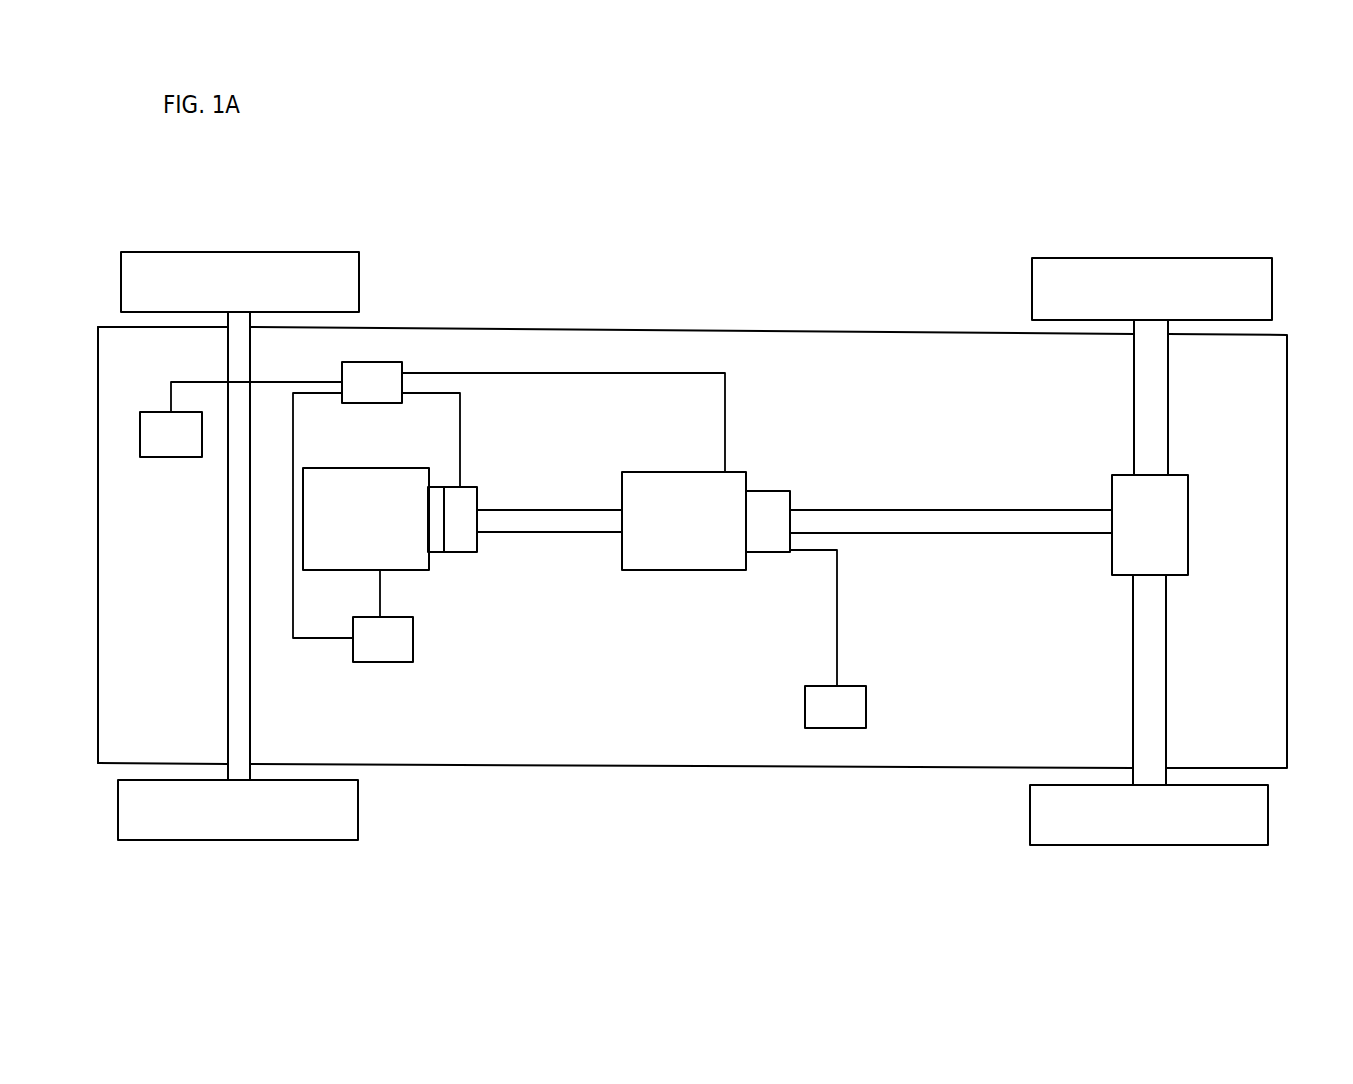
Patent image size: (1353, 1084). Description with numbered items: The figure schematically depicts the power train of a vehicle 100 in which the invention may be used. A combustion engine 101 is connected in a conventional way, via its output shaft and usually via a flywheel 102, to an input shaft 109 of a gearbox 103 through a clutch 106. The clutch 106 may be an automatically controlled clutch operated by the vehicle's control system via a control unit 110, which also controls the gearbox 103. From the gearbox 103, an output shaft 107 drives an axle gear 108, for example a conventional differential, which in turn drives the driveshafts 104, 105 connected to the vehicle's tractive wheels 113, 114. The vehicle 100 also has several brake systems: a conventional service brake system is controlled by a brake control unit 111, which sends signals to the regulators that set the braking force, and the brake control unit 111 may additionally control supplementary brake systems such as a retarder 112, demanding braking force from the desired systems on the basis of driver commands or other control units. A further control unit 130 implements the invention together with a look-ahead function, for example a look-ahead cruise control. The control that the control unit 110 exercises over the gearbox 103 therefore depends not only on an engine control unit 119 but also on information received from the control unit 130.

The vehicle 100 is at (605, 150).
The combustion engine 101 is at (325, 557).
The flywheel 102 is at (437, 497).
The gearbox 103 is at (687, 483).
The driveshaft 104 is at (1155, 395).
The driveshaft 105 is at (1159, 685).
The clutch 106 is at (483, 563).
The output shaft 107 is at (1028, 528).
The axle gear 108 is at (1183, 517).
The input shaft 109 is at (587, 522).
The control unit 110 is at (509, 500).
The brake control unit 111 is at (828, 639).
The retarder 112 is at (768, 548).
The tractive wheel 113 is at (1265, 282).
The tractive wheel 114 is at (1263, 815).
The engine control unit 119 is at (383, 616).
The control unit 130 is at (241, 419).